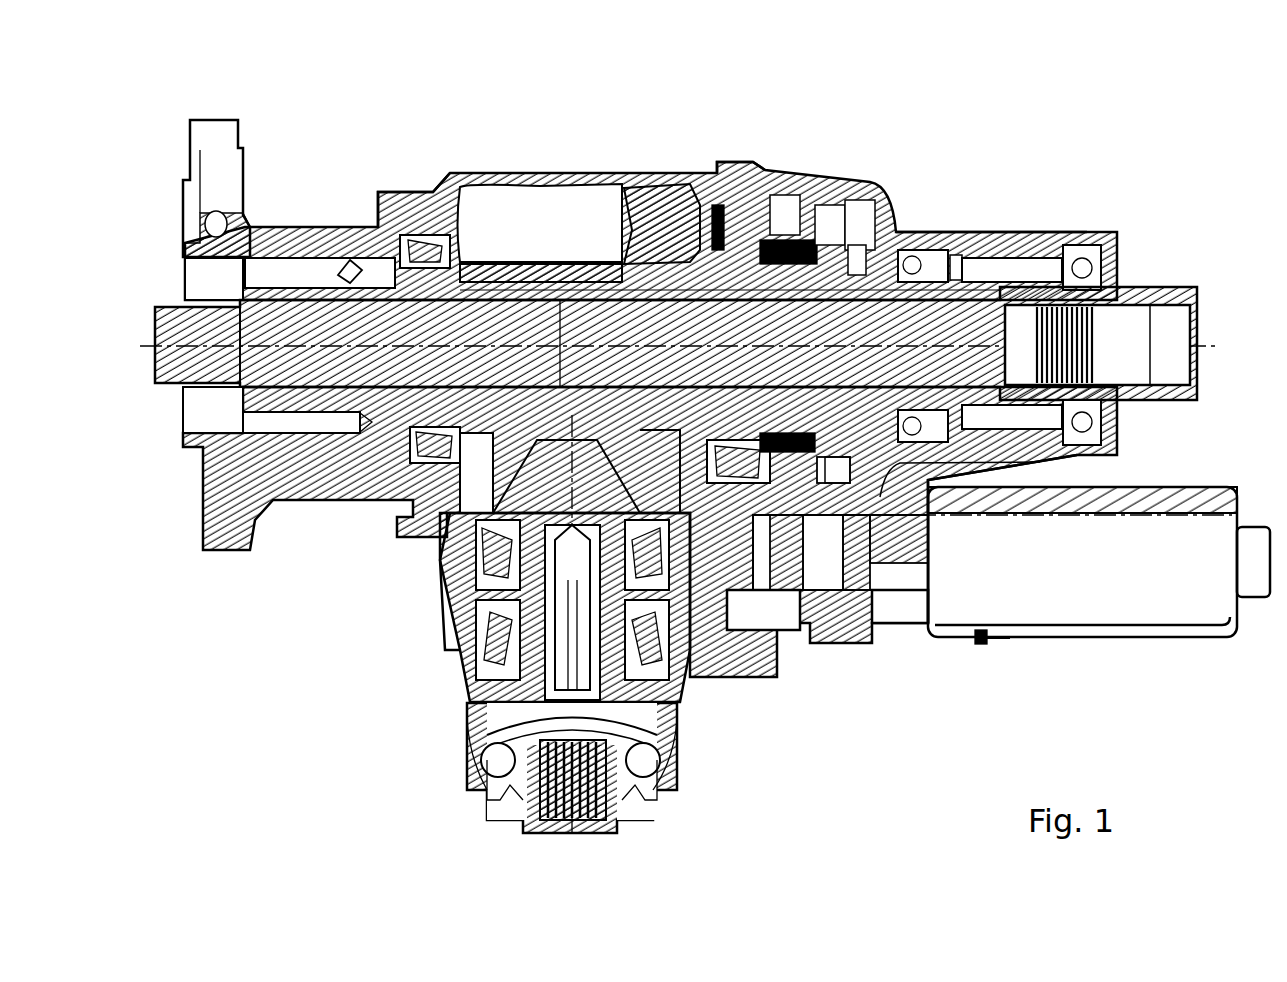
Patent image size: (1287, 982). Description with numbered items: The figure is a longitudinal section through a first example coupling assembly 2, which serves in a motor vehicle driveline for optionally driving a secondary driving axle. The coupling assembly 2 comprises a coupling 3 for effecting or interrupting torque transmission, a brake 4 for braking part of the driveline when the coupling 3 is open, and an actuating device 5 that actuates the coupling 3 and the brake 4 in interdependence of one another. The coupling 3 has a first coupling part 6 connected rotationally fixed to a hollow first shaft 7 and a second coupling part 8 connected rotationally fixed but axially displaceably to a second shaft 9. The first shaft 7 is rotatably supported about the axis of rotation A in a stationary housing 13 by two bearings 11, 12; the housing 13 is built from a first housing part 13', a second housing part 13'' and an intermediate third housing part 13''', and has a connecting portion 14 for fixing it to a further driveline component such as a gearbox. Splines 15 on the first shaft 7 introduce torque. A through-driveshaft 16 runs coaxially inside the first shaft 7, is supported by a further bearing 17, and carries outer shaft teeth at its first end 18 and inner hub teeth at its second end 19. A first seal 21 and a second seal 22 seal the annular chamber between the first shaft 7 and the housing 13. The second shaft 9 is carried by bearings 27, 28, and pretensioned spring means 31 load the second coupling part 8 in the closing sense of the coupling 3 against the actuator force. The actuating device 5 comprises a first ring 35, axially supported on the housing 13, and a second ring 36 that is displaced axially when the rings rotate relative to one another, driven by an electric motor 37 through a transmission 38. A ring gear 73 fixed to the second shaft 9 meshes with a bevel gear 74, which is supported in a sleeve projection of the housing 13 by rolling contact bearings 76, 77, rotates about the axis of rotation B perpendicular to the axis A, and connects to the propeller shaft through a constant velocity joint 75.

The coupling assembly 2 is at (660, 98).
The coupling 3 is at (852, 235).
The brake 4 is at (808, 215).
The actuating device 5 is at (835, 225).
The first coupling part 6 is at (905, 262).
The first shaft 7 is at (491, 296).
The second coupling part 8 is at (858, 250).
The second shaft 9 is at (578, 268).
The bearing 11 is at (952, 265).
The bearing 12 is at (412, 438).
The housing 13 is at (651, 180).
The first housing part 13' is at (406, 170).
The second housing part 13'' is at (995, 177).
The third housing part 13''' is at (757, 113).
The connecting portion 14 is at (220, 537).
The splines 15 is at (275, 272).
The through-driveshaft 16 is at (528, 322).
The bearing 17 is at (1080, 245).
The first end 18 is at (160, 393).
The second end 19 is at (1140, 380).
The first seal 21 is at (343, 258).
The second seal 22 is at (995, 268).
The bearing 27 is at (425, 232).
The bearing 28 is at (735, 212).
The spring means 31 is at (776, 205).
The first ring 35 is at (880, 520).
The second ring 36 is at (832, 485).
The electric motor 37 is at (1120, 612).
The transmission 38 is at (858, 550).
The ring gear 73 is at (621, 265).
The bevel gear 74 is at (480, 555).
The constant velocity joint 75 is at (455, 742).
The rolling contact bearing 76 is at (445, 600).
The rolling contact bearing 77 is at (455, 655).
The axis of rotation A is at (1165, 345).
The axis of rotation B is at (545, 600).